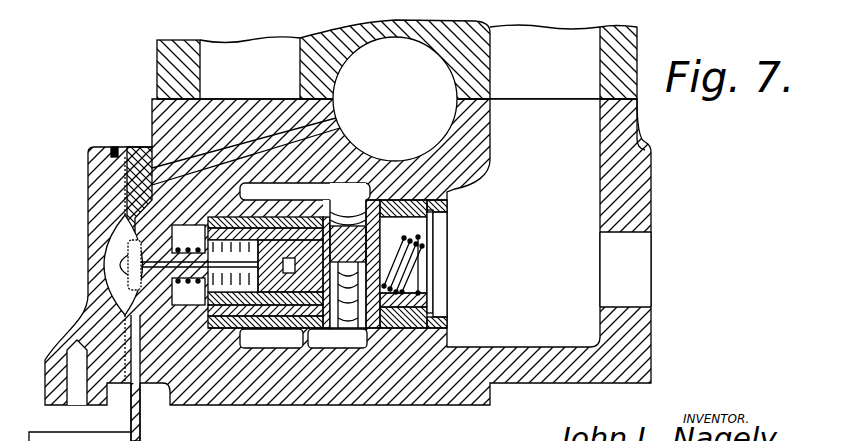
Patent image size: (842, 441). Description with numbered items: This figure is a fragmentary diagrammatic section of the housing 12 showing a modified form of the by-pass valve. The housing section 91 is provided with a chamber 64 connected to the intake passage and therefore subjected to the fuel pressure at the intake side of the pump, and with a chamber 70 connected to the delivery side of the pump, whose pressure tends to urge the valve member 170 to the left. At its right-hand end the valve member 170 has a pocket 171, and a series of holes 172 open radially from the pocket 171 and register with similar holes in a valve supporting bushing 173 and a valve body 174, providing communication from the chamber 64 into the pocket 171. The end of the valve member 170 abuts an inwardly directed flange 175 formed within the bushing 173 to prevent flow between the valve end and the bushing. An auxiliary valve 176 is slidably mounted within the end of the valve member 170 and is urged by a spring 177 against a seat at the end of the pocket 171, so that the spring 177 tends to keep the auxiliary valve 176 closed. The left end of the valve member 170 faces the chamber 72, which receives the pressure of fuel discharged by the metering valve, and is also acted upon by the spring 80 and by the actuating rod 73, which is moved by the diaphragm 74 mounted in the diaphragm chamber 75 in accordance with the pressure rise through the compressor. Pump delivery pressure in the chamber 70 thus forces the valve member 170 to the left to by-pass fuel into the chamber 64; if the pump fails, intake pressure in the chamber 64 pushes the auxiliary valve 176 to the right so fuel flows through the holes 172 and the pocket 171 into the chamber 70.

The housing body 12 is at (640, 50).
The housing section 91 is at (639, 133).
The chamber 70 is at (537, 345).
The chamber 72 is at (163, 387).
The actuating rod 73 is at (188, 291).
The diaphragm 74 is at (125, 226).
The diaphragm chamber 75 is at (114, 255).
The spring 80 is at (188, 239).
The chamber 64 is at (282, 300).
The valve member 170 is at (271, 339).
The pocket 171 is at (352, 293).
The holes 172 is at (337, 339).
The valve supporting bushing 173 is at (233, 300).
The valve body 174 is at (307, 323).
The inwardly directed flange 175 is at (432, 292).
The auxiliary valve 176 is at (423, 238).
The spring 177 is at (420, 265).